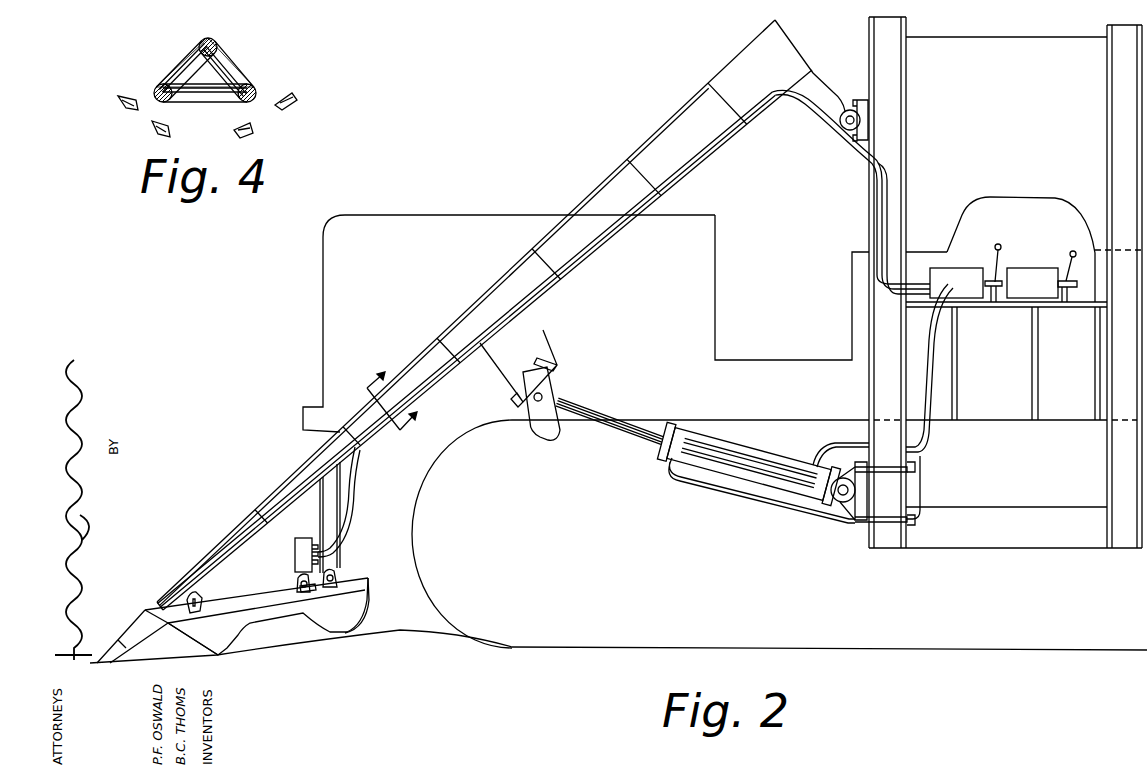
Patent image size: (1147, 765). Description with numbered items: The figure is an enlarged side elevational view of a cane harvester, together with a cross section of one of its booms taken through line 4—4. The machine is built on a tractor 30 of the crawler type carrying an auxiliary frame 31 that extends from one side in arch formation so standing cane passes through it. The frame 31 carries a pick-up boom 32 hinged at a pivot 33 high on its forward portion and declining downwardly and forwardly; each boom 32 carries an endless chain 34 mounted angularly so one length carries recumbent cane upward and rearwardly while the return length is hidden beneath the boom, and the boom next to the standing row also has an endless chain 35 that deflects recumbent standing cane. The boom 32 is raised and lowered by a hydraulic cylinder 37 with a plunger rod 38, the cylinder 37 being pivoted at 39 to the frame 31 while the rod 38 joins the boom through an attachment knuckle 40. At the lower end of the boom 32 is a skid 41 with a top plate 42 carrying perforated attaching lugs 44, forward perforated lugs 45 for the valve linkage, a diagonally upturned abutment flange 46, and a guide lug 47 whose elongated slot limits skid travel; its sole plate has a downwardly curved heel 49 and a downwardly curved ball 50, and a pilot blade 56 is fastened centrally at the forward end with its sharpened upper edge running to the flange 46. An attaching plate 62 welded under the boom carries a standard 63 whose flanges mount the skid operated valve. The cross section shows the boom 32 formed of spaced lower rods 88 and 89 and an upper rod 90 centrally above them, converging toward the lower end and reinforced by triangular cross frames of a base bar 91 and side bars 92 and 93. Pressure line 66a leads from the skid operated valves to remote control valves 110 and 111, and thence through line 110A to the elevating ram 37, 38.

In FIG. 2, the tractor 30 is at (443, 222).
In FIG. 2, the auxiliary frame 31 is at (1110, 66).
In FIG. 4, the boom 32 is at (240, 60).
In FIG. 2, the boom 32 is at (716, 68).
In FIG. 2, the pivot 33 is at (858, 118).
In FIG. 4, the endless chain 34 is at (113, 97).
In FIG. 4, the endless chain 35 is at (296, 97).
In FIG. 2, the hydraulic cylinder 37 is at (765, 478).
In FIG. 2, the plunger rod 38 is at (620, 425).
In FIG. 2, the pivot 39 is at (842, 498).
In FIG. 2, the attachment knuckle 40 is at (553, 386).
In FIG. 2, the skid 41 is at (274, 630).
In FIG. 2, the top plate 42 is at (262, 600).
In FIG. 2, the attaching lug 44 is at (337, 580).
In FIG. 2, the perforated lug 45 is at (307, 590).
In FIG. 2, the abutment flange 46 is at (143, 610).
In FIG. 2, the guide lug 47 is at (212, 593).
In FIG. 2, the heel 49 is at (348, 623).
In FIG. 2, the ball 50 is at (222, 655).
In FIG. 2, the pilot blade 56 is at (132, 637).
In FIG. 2, the attaching plate 62 is at (246, 538).
In FIG. 2, the standard 63 is at (327, 508).
In FIG. 2, the pressure line 66a is at (358, 462).
In FIG. 4, the lower rod 88 is at (157, 90).
In FIG. 4, the lower rod 89 is at (253, 98).
In FIG. 4, the upper rod 90 is at (205, 40).
In FIG. 4, the base bar 91 is at (233, 102).
In FIG. 4, the side bar 92 is at (192, 58).
In FIG. 4, the side bar 93 is at (245, 77).
In FIG. 2, the remote control valve 110 is at (966, 266).
In FIG. 2, the remote control valve 111 is at (1040, 266).
In FIG. 2, the line 110A is at (928, 384).
In FIG. 2, the section line 4 is at (384, 407).